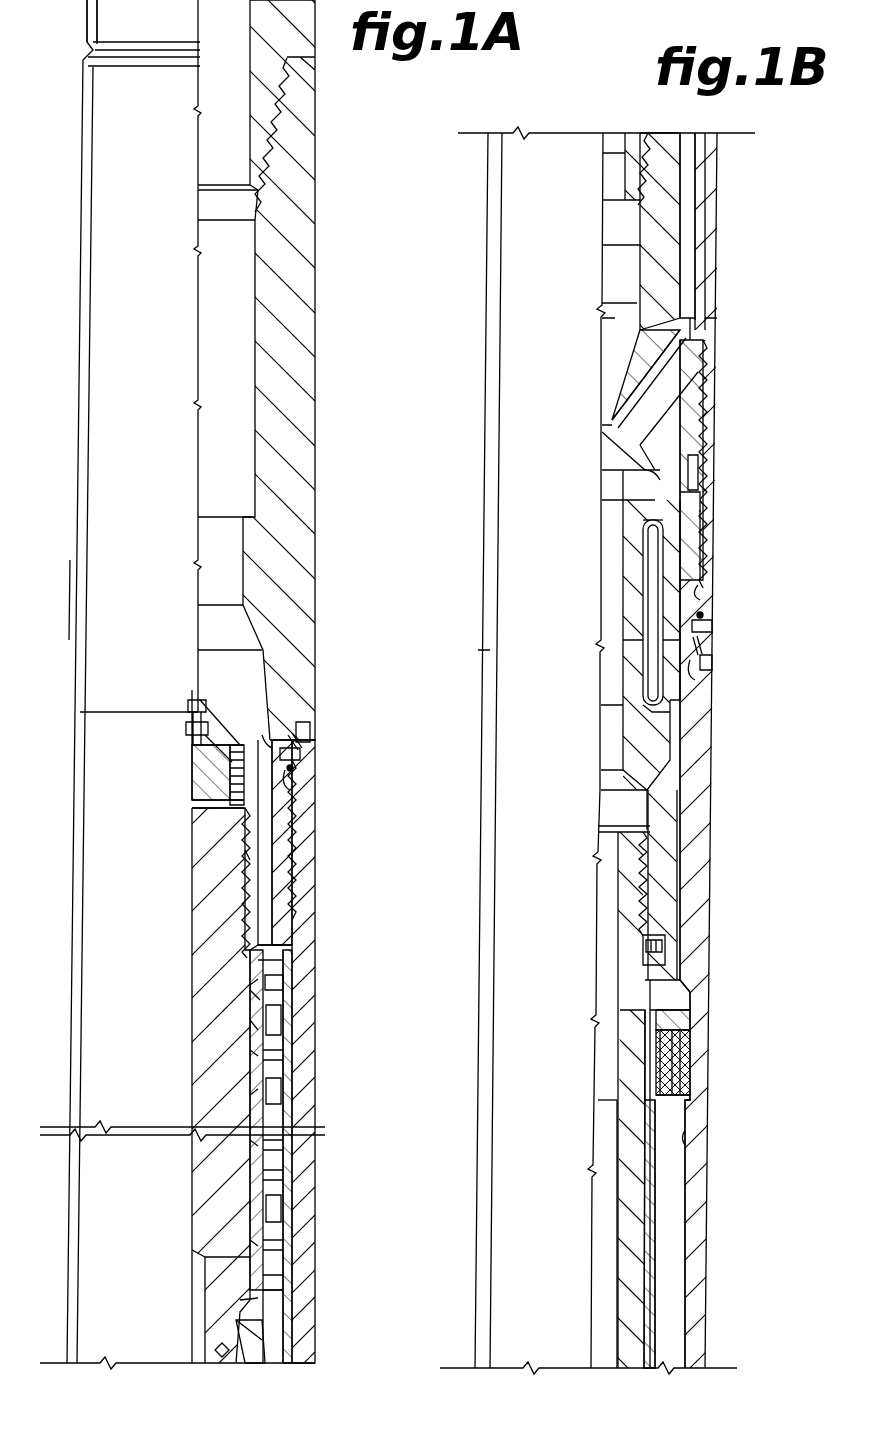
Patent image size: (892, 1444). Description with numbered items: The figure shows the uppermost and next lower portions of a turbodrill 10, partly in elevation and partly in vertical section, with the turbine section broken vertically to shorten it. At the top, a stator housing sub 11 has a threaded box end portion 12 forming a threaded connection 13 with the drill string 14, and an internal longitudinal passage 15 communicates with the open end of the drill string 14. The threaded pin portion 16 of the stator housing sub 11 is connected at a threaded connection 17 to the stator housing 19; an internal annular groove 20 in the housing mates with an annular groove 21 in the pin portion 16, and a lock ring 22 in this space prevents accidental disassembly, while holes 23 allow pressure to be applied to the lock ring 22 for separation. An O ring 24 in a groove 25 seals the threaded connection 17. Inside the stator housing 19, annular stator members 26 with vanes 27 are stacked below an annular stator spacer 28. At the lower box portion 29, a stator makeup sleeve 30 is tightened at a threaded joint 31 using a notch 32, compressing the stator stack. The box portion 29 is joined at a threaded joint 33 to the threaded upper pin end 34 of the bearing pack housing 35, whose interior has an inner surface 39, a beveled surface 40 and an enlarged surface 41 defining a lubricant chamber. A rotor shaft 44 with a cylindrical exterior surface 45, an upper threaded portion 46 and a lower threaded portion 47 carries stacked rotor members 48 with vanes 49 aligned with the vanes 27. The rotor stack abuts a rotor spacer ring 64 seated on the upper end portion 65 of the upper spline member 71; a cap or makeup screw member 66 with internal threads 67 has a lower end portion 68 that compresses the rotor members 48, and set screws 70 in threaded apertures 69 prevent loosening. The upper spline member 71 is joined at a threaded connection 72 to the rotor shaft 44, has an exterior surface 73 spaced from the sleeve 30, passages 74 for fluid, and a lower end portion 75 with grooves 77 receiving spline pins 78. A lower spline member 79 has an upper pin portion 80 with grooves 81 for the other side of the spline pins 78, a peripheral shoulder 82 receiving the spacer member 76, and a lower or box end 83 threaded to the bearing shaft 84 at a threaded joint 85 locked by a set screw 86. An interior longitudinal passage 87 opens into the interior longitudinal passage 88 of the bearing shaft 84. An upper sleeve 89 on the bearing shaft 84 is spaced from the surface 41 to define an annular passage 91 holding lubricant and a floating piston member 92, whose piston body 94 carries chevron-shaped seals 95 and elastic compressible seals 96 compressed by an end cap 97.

In FIG. 1A, the turbodrill 10 is at (64, 606).
In FIG. 1A, the stator housing sub 11 is at (100, 330).
In FIG. 1A, the threaded box end portion 12 is at (280, 82).
In FIG. 1A, the threaded connection 13 is at (285, 130).
In FIG. 1A, the drill string 14 is at (85, 20).
In FIG. 1A, the internal longitudinal passage 15 is at (252, 378).
In FIG. 1A, the threaded pin portion 16 is at (278, 826).
In FIG. 1A, the threaded connection 17 is at (290, 843).
In FIG. 1A, the stator housing 19 is at (303, 945).
In FIG. 1B, the stator housing 19 is at (712, 227).
In FIG. 1A, the internal annular groove 20 is at (296, 754).
In FIG. 1A, the annular groove 21 is at (265, 738).
In FIG. 1A, the lock ring 22 is at (300, 728).
In FIG. 1A, the holes 23 is at (302, 741).
In FIG. 1A, the O ring 24 is at (293, 769).
In FIG. 1A, the groove 25 is at (300, 791).
In FIG. 1A, the stator members 26 is at (288, 1010).
In FIG. 1A, the vanes or blades 27 is at (283, 986).
In FIG. 1A, the annular stator spacer 28 is at (288, 963).
In FIG. 1B, the box portion 29 is at (700, 522).
In FIG. 1A, the stator makeup sleeve 30 is at (278, 1346).
In FIG. 1B, the stator makeup sleeve 30 is at (698, 303).
In FIG. 1B, the threaded joint 31 is at (708, 374).
In FIG. 1B, the notch 32 is at (693, 470).
In FIG. 1B, the threaded joint 33 is at (712, 533).
In FIG. 1B, the threaded upper pin end 34 is at (692, 505).
In FIG. 1B, the bearing pack housing 35 is at (702, 840).
In FIG. 1B, the inner surface 39 is at (683, 760).
In FIG. 1B, the beveled surface 40 is at (690, 980).
In FIG. 1B, the surface 41 is at (688, 1138).
In FIG. 1A, the rotor shaft 44 is at (250, 1000).
In FIG. 1A, the cylindrical exterior surface 45 is at (250, 1026).
In FIG. 1A, the threaded portion 46 is at (244, 862).
In FIG. 1A, the threaded portion 47 is at (216, 1349).
In FIG. 1B, the threaded portion 47 is at (610, 168).
In FIG. 1A, the rotor members 48 is at (258, 986).
In FIG. 1A, the blades or vanes 49 is at (274, 1030).
In FIG. 1A, the rotor spacer ring 64 is at (252, 1305).
In FIG. 1A, the upper end portion 65 is at (252, 1316).
In FIG. 1A, the cap or makeup screw member 66 is at (195, 700).
In FIG. 1A, the internal threads 67 is at (244, 812).
In FIG. 1A, the lower end portion 68 is at (252, 952).
In FIG. 1A, the threaded apertures 69 is at (238, 745).
In FIG. 1A, the set screws 70 is at (232, 778).
In FIG. 1A, the upper spline member 71 is at (252, 1336).
In FIG. 1B, the threaded connection 72 is at (683, 153).
In FIG. 1B, the exterior surface 73 is at (690, 190).
In FIG. 1B, the passages 74 is at (625, 400).
In FIG. 1B, the lower end portion 75 is at (648, 640).
In FIG. 1B, the spacer member 76 is at (695, 700).
In FIG. 1B, the grooves 77 is at (630, 474).
In FIG. 1B, the spline pins 78 is at (650, 560).
In FIG. 1B, the lower spline member 79 is at (630, 712).
In FIG. 1B, the upper pin portion 80 is at (623, 578).
In FIG. 1B, the grooves 81 is at (646, 537).
In FIG. 1B, the peripheral shoulder 82 is at (686, 733).
In FIG. 1B, the lower or box end 83 is at (665, 872).
In FIG. 1B, the bearing shaft 84 is at (622, 1268).
In FIG. 1B, the threaded joint 85 is at (643, 900).
In FIG. 1B, the set screw 86 is at (665, 945).
In FIG. 1B, the interior longitudinal passage 87 is at (623, 605).
In FIG. 1B, the interior longitudinal passage 88 is at (620, 1065).
In FIG. 1B, the upper sleeve 89 is at (642, 1232).
In FIG. 1B, the annular passage 91 is at (668, 1176).
In FIG. 1B, the floating piston member 92 is at (690, 1060).
In FIG. 1B, the piston body 94 is at (688, 1106).
In FIG. 1B, the chevron-shaped seals 95 is at (648, 1043).
In FIG. 1B, the elastic compressible seals 96 is at (690, 1034).
In FIG. 1B, the end cap 97 is at (686, 1012).